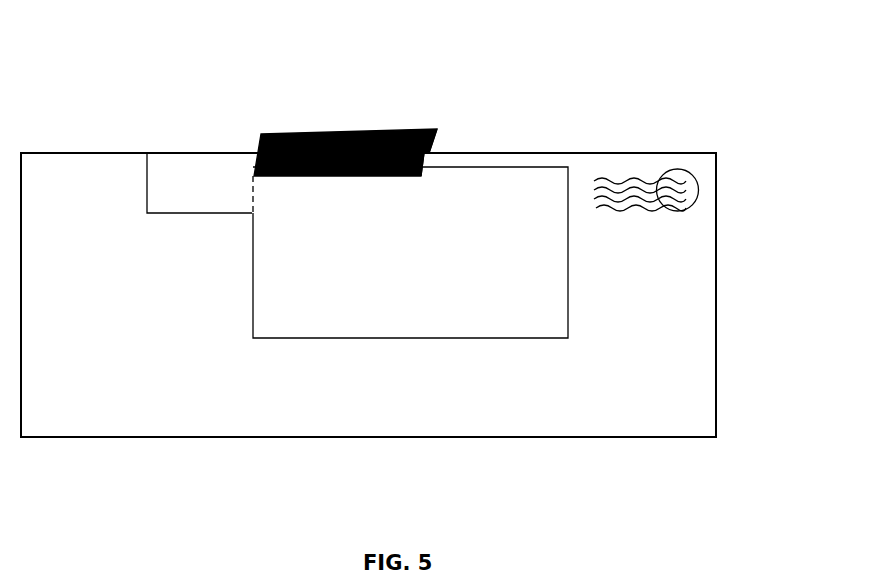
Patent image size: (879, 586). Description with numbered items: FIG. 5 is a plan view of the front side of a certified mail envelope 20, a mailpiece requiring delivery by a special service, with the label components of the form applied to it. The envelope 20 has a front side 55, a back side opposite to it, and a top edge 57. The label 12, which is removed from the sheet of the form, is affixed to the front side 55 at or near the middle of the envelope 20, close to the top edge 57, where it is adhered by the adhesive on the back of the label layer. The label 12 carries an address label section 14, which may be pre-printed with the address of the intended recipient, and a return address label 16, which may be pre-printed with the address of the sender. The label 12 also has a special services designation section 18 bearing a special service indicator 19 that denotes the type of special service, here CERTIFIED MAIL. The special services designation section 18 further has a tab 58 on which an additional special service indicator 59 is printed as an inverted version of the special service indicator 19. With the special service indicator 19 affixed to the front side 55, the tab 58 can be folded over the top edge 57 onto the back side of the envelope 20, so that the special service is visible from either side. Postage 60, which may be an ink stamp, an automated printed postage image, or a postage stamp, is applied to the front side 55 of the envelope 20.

The label 12 is at (568, 167).
The address label section 14 is at (522, 293).
The return address label 16 is at (172, 176).
The special services designation section 18 is at (252, 150).
The special service indicator 19 is at (365, 133).
The certified mail envelope 20 is at (789, 181).
The front side 55 is at (678, 375).
The top edge 57 is at (475, 152).
The tab 58 is at (433, 135).
The additional special service indicator 59 is at (303, 134).
The postage 60 is at (678, 178).